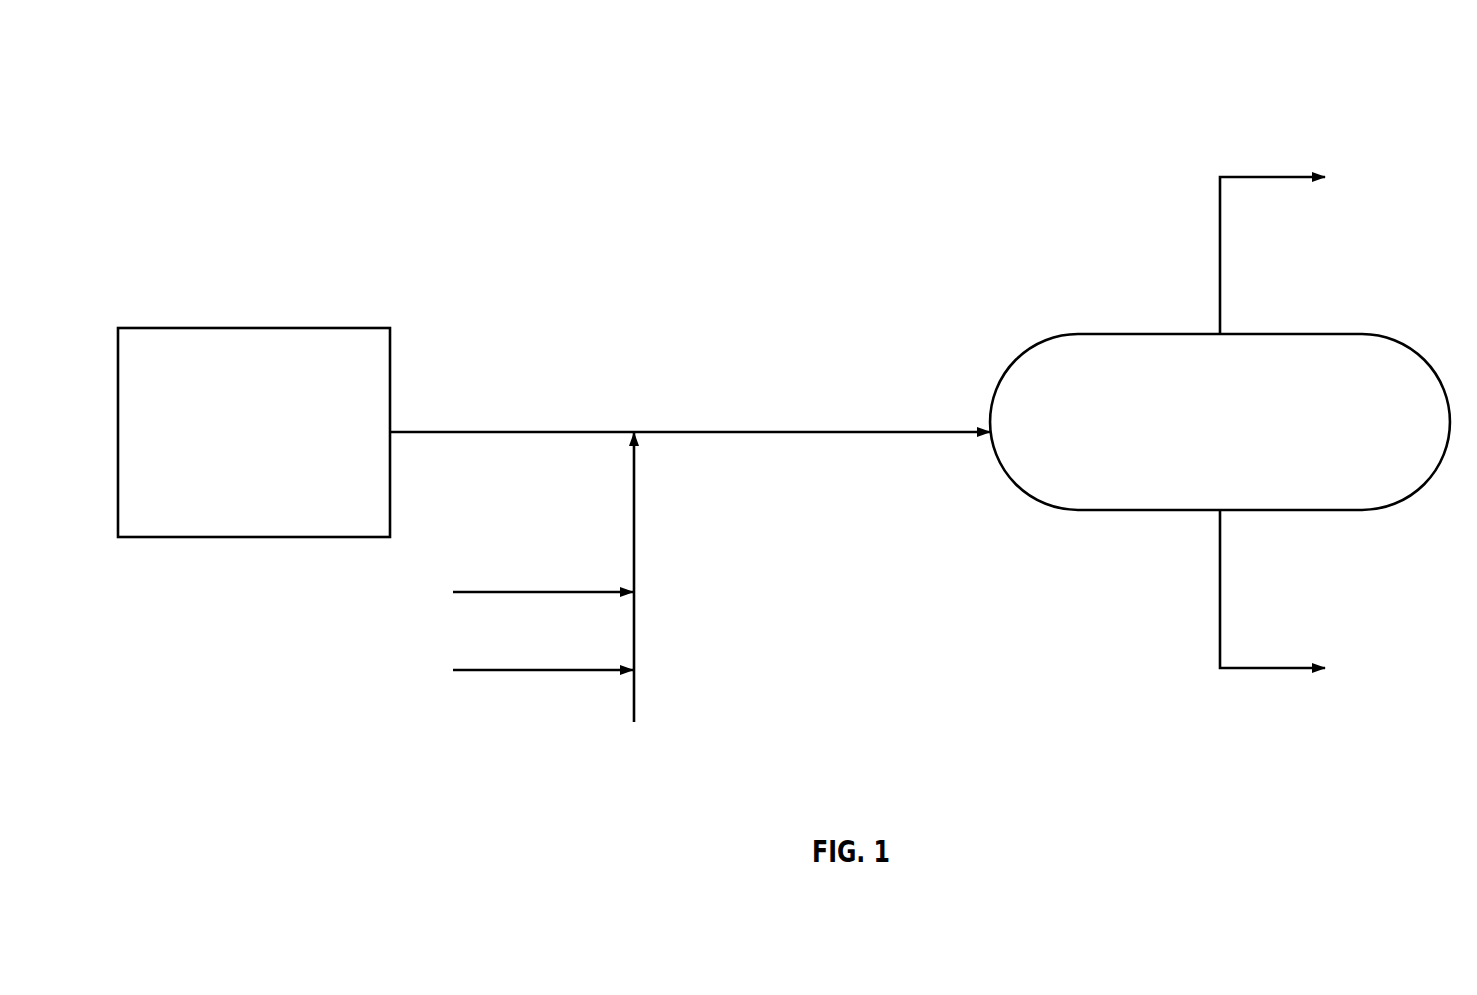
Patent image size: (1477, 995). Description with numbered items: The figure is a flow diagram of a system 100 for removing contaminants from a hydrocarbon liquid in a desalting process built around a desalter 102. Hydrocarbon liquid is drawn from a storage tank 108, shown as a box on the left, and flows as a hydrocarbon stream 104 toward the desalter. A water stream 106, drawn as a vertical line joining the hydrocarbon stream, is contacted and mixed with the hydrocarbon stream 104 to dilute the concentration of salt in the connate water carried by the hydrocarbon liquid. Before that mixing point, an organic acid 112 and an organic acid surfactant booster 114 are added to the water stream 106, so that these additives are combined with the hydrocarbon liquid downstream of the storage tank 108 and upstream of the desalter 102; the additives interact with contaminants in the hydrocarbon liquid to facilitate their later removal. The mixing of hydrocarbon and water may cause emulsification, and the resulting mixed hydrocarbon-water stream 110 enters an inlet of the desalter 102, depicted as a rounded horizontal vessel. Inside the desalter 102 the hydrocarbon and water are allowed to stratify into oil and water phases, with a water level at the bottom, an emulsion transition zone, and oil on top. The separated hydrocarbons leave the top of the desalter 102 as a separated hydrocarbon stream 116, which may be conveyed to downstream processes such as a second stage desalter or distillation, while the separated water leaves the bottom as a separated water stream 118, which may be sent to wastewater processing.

The system 100 is at (1332, 64).
The desalter 102 is at (1295, 334).
The hydrocarbon stream 104 is at (507, 432).
The water stream 106 is at (635, 512).
The storage tank 108 is at (190, 328).
The mixed hydrocarbon-water stream 110 is at (887, 432).
The organic acid 112 is at (518, 592).
The organic acid surfactant booster 114 is at (515, 672).
The separated hydrocarbon stream 116 is at (1297, 177).
The separated water stream 118 is at (1295, 668).